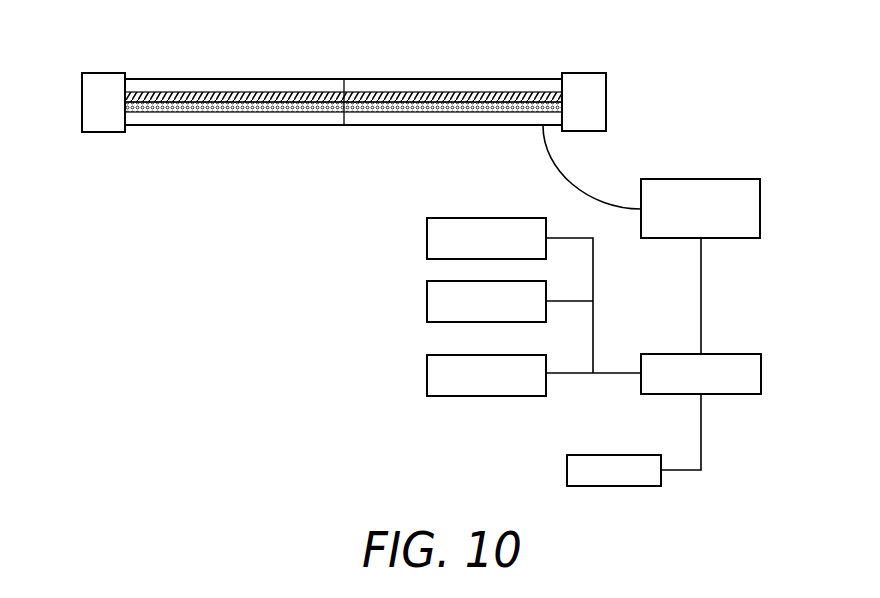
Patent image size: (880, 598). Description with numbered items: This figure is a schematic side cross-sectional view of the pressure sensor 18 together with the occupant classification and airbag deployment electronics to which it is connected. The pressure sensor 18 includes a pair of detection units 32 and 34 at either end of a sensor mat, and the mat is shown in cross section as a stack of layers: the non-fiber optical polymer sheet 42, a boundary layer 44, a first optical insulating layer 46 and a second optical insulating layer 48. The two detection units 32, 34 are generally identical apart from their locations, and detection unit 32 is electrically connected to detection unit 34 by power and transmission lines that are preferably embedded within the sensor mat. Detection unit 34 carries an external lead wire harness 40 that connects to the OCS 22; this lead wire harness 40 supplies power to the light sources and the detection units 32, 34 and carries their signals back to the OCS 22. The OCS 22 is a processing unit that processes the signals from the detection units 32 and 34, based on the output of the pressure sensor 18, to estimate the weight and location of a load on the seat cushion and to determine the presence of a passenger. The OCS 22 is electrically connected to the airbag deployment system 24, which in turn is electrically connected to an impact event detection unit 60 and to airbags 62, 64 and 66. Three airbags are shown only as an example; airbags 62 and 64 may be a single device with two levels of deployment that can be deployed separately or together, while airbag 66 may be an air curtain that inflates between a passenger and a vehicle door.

The pressure sensor 18 is at (362, 53).
The occupant classification system (OCS) 22 is at (710, 186).
The airbag deployment system 24 is at (742, 366).
The detection unit 32 is at (88, 128).
The detection unit 34 is at (587, 78).
The lead wire harness 40 is at (575, 190).
The non-fiber optical polymer sheet 42 is at (233, 107).
The boundary layer 44 is at (148, 95).
The first optical insulating layer 46 is at (198, 85).
The second optical insulating layer 48 is at (300, 118).
The impact event detection unit 60 is at (636, 477).
The airbag 62 is at (436, 373).
The airbag 64 is at (436, 299).
The airbag 66 is at (436, 236).